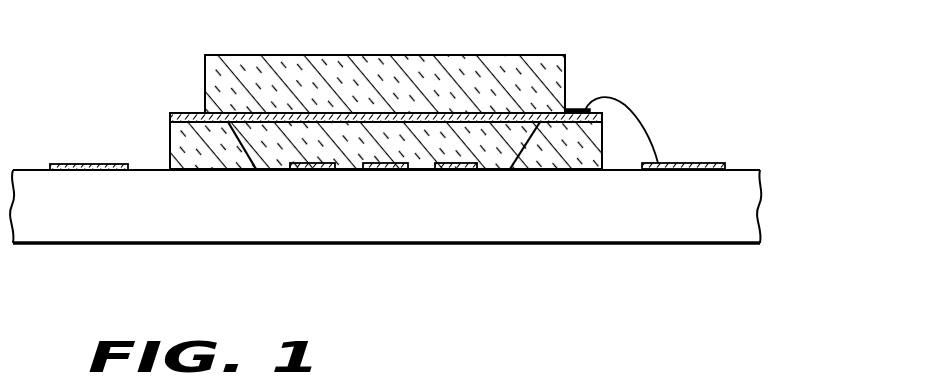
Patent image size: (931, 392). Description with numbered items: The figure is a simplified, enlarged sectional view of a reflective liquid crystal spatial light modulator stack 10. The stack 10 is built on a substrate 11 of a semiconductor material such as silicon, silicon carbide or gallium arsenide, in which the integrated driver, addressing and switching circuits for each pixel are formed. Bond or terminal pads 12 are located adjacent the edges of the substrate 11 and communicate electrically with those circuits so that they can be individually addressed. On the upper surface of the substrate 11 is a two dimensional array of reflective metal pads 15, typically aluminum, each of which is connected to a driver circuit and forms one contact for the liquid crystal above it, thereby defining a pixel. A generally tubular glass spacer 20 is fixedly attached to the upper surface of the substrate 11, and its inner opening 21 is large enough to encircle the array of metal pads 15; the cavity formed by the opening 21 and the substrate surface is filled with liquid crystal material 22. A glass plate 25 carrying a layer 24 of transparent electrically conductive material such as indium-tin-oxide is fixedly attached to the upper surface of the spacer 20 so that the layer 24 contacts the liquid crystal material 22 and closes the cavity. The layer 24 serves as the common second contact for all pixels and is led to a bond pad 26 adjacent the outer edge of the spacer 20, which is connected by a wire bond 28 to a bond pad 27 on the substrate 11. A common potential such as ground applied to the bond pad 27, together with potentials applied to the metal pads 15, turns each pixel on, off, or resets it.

The reflective liquid crystal spatial light modulator stack 10 is at (385, 170).
The substrate 11 is at (640, 243).
The bond or terminal pads 12 is at (57, 164).
The reflective metal pads 15 is at (319, 170).
The glass spacer 20 is at (216, 164).
The inner opening 21 is at (360, 165).
The liquid crystal material 22 is at (506, 164).
The transparent electrically conductive material layer 24 is at (187, 113).
The glass plate 25 is at (277, 55).
The bond pad 26 is at (578, 108).
The bond pad 27 is at (706, 163).
The wire bond 28 is at (638, 117).